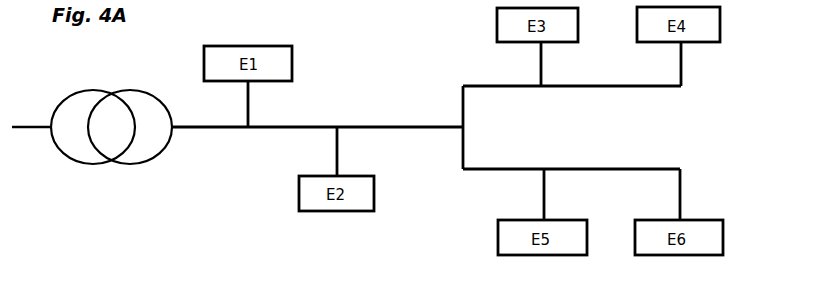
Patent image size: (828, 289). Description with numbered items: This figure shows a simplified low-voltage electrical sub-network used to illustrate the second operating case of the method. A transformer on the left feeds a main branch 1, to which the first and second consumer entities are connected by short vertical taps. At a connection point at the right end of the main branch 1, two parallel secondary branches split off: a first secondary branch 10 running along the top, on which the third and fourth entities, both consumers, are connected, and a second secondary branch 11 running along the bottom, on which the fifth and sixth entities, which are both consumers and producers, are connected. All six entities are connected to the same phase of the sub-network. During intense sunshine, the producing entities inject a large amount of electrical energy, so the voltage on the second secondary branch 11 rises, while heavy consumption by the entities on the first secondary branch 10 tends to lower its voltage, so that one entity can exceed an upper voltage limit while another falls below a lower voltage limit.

The main branch 1 is at (398, 124).
The first secondary branch 10 is at (607, 85).
The second secondary branch 11 is at (611, 170).